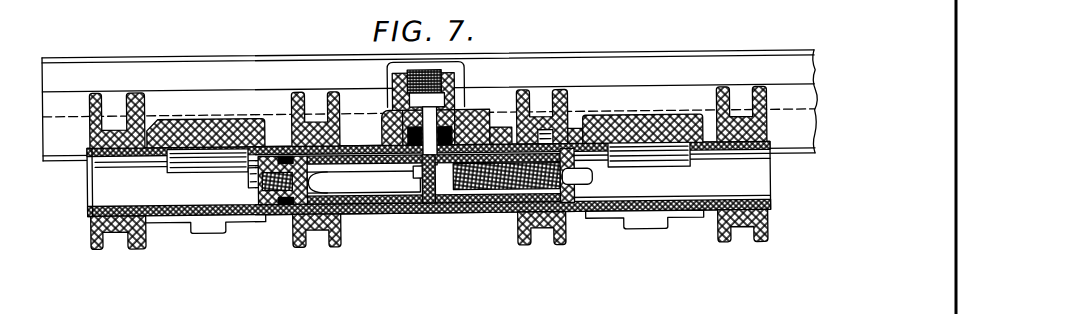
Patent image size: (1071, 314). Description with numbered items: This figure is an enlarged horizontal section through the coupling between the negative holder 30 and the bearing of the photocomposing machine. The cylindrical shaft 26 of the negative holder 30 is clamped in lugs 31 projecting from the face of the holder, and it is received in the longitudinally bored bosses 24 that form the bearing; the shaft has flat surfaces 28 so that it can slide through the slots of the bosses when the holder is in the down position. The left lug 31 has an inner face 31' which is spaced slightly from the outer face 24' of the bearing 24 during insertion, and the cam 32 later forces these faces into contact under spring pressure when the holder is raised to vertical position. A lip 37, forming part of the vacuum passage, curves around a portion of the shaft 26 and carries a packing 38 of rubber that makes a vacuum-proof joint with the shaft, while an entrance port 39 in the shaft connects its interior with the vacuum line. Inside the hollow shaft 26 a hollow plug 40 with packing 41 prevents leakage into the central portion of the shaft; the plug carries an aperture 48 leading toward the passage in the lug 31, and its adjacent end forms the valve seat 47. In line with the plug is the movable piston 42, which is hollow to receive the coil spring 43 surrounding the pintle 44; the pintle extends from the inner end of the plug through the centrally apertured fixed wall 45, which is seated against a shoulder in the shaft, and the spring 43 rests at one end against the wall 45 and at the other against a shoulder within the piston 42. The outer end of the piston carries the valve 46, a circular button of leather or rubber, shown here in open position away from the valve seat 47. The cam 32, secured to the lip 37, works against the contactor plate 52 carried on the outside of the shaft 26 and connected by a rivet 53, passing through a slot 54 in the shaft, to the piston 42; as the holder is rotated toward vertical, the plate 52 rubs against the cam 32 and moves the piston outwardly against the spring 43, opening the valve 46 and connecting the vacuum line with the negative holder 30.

The negative holder 30 is at (706, 72).
The lug 31 is at (431, 154).
The inner face of lug 31' is at (115, 98).
The boss 24 is at (424, 170).
The outer face of bearing 24' is at (170, 97).
The cylindrical shaft 26 is at (396, 214).
The flat surface 28 is at (209, 165).
The lip 37 is at (393, 108).
The packing 38 is at (410, 140).
The cam 32 is at (496, 128).
The plate or contactor 52 is at (530, 136).
The rivet 53 is at (560, 138).
The entrance port 39 is at (418, 172).
The hollow plug 40 is at (366, 187).
The packing 41 is at (283, 214).
The aperture 48 is at (322, 187).
The valve seat 47 is at (424, 213).
The valve 46 is at (430, 207).
The movable plug or piston 42 is at (481, 212).
The slot 54 is at (515, 192).
The coil spring 43 is at (533, 205).
The pintle 44 is at (596, 182).
The fixed wall 45 is at (577, 195).